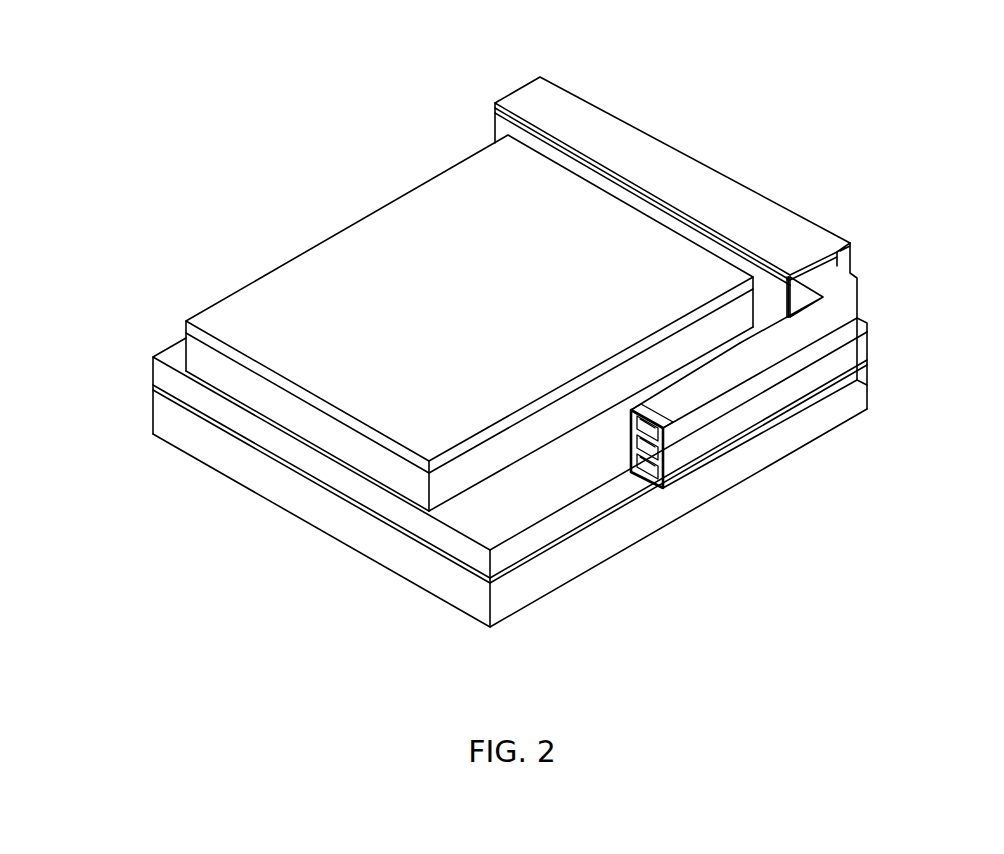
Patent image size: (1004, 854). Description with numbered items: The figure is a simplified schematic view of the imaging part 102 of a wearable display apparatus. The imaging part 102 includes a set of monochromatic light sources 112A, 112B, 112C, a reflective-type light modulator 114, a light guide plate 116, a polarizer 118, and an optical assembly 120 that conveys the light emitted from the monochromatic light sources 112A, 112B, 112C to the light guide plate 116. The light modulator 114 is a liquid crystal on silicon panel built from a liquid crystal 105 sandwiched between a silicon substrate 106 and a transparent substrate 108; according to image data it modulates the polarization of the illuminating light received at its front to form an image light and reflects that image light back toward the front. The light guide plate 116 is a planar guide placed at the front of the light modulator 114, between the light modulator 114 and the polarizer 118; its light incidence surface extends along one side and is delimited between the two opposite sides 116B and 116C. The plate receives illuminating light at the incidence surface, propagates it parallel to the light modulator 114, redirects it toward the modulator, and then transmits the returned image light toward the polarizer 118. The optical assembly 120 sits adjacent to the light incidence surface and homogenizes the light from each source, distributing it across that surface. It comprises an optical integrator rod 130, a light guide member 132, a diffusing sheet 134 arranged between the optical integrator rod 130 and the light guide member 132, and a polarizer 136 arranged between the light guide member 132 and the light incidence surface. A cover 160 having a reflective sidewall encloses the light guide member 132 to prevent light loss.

The imaging part 102 is at (138, 60).
The liquid crystal 105 is at (161, 391).
The silicon substrate 106 is at (161, 414).
The transparent substrate 108 is at (161, 372).
The monochromatic light source 112A is at (667, 431).
The monochromatic light source 112B is at (665, 459).
The monochromatic light source 112C is at (647, 474).
The reflective-type light modulator 114 is at (82, 350).
The light guide plate 116 is at (192, 357).
The side of the light guide plate 116B is at (497, 487).
The side of the light guide plate 116C is at (201, 304).
The polarizer 118 is at (335, 249).
The optical assembly 120 is at (884, 305).
The optical integrator rod 130 is at (770, 417).
The light guide member 132 is at (753, 257).
The diffusing sheet 134 is at (845, 245).
The polarizer 136 is at (572, 167).
The cover 160 is at (688, 176).